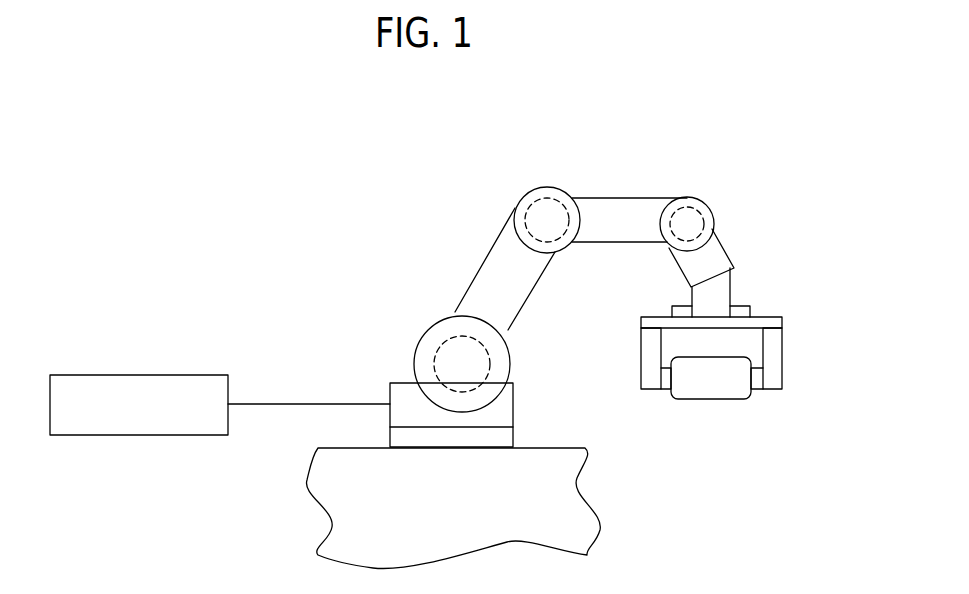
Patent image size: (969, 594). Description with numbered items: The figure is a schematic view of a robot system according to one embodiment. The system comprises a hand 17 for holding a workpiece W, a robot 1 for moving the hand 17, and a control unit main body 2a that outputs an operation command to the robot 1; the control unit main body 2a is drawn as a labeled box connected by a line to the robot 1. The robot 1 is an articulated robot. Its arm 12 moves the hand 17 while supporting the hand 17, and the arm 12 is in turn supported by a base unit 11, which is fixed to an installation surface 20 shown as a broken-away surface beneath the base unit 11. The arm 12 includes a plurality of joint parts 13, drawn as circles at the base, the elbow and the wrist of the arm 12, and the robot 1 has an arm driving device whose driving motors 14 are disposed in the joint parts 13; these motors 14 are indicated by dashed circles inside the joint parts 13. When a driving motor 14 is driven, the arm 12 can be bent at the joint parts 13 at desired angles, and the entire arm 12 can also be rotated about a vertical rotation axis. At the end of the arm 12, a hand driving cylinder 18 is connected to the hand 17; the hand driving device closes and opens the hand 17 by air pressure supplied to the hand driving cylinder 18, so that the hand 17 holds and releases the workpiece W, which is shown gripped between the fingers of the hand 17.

The robot 1 is at (620, 213).
The control unit main body 2a is at (87, 375).
The base unit 11 is at (503, 412).
The arm 12 is at (480, 267).
The joint part 13 is at (528, 190).
The driving motor 14 is at (490, 367).
The hand 17 is at (773, 350).
The hand driving cylinder 18 is at (743, 305).
The installation surface 20 is at (582, 528).
The workpiece W is at (718, 388).